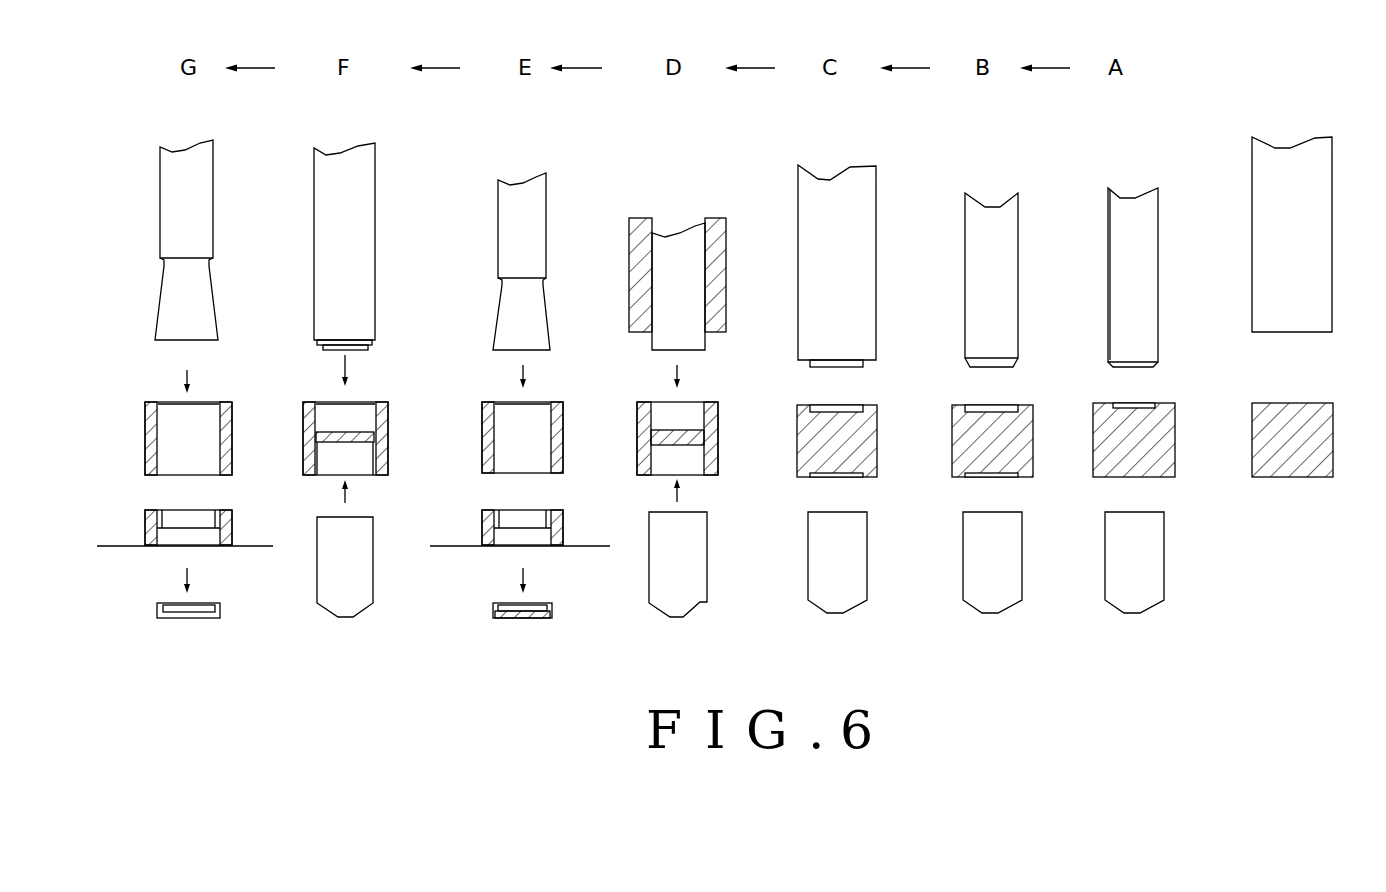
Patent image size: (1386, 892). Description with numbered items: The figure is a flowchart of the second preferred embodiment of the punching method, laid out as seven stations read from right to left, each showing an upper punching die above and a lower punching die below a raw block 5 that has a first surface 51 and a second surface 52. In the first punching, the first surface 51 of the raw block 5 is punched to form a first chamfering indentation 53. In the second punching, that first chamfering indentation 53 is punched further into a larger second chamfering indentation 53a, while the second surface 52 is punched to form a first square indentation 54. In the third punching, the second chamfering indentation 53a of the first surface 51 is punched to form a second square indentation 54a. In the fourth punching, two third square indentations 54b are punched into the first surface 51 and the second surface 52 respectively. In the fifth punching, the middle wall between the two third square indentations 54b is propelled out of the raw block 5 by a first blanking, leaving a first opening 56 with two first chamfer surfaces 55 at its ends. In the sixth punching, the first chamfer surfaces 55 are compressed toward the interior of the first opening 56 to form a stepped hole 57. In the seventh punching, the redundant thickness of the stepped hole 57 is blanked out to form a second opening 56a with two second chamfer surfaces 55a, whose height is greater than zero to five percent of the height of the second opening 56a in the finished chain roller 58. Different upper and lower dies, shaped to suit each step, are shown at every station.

The raw block 5 is at (388, 434).
The first surface 51 is at (388, 403).
The second surface 52 is at (388, 477).
The first chamfering indentation 53 is at (1137, 403).
The second chamfering indentation 53a is at (993, 408).
The first square indentation 54 is at (848, 475).
The second square indentation 54a is at (838, 408).
The third square indentations 54b is at (668, 420).
The first chamfer surfaces 55 is at (532, 401).
The second chamfer surfaces 55a is at (248, 383).
The first opening 56 is at (363, 408).
The second opening 56a is at (178, 457).
The stepped hole 57 is at (345, 438).
The chain roller 58 is at (232, 437).